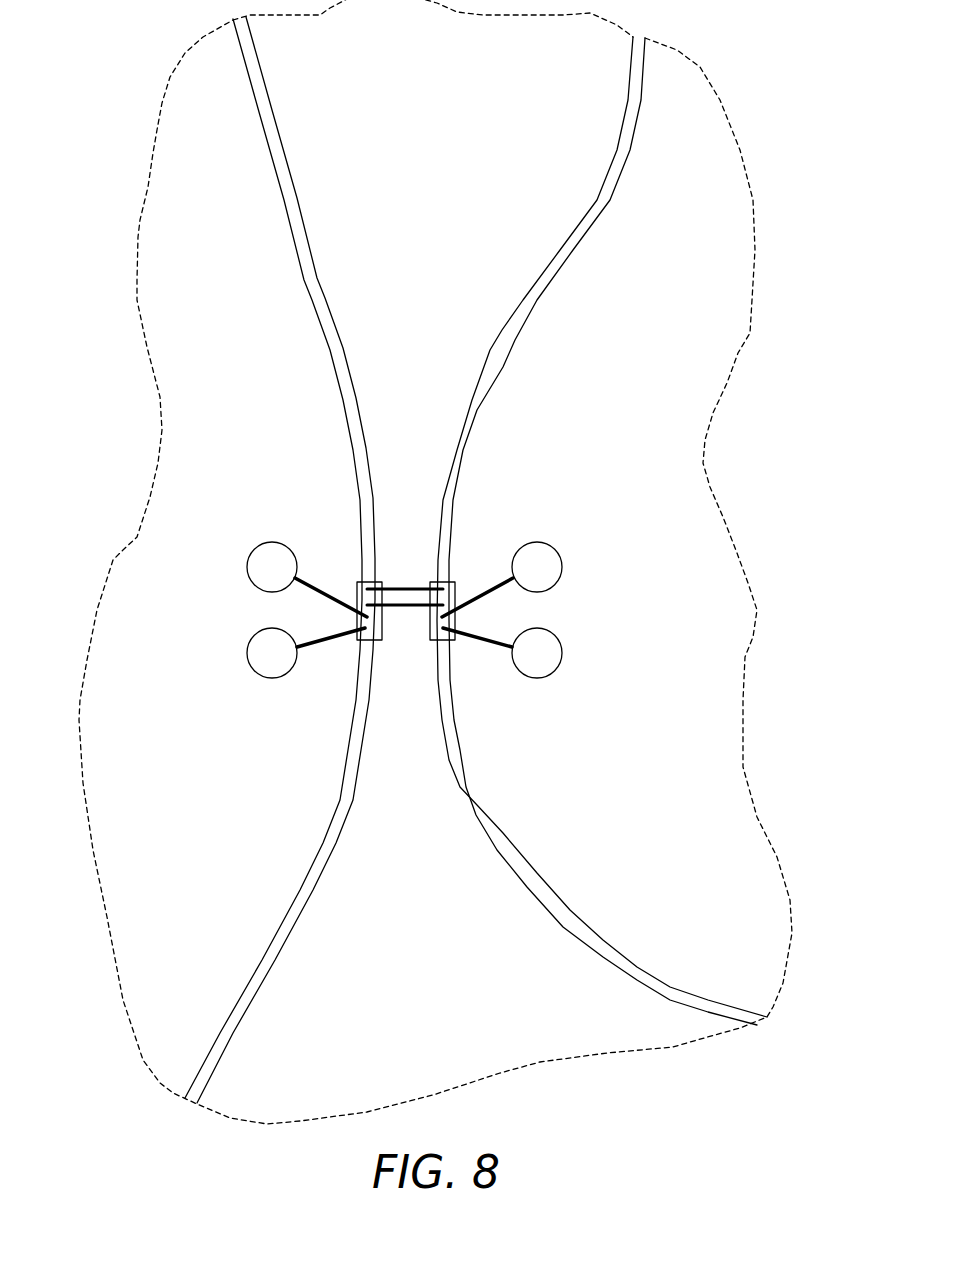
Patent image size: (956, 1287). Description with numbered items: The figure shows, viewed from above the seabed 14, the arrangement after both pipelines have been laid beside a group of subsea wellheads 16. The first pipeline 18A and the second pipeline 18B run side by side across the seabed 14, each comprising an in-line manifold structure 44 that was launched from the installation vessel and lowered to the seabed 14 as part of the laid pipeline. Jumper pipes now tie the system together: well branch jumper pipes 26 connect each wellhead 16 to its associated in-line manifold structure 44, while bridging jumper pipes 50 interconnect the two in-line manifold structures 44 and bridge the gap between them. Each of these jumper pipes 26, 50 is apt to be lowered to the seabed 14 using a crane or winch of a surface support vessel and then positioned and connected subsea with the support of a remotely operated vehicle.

The seabed 14 is at (135, 228).
The first pipeline 18A is at (530, 293).
The second pipeline 18B is at (290, 218).
The in-line manifold structure 44 is at (362, 587).
The bridging jumper pipe 50 is at (415, 585).
The well branch jumper pipe 26 is at (310, 590).
The subsea wellhead 16 is at (260, 645).